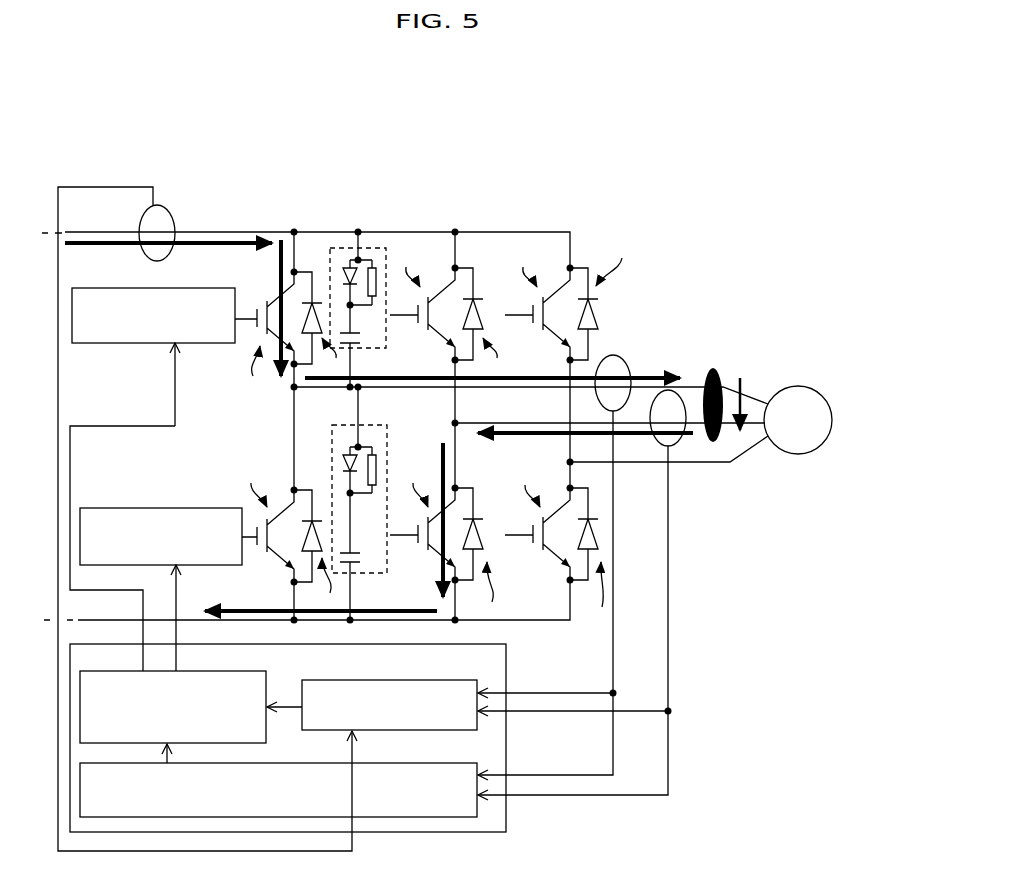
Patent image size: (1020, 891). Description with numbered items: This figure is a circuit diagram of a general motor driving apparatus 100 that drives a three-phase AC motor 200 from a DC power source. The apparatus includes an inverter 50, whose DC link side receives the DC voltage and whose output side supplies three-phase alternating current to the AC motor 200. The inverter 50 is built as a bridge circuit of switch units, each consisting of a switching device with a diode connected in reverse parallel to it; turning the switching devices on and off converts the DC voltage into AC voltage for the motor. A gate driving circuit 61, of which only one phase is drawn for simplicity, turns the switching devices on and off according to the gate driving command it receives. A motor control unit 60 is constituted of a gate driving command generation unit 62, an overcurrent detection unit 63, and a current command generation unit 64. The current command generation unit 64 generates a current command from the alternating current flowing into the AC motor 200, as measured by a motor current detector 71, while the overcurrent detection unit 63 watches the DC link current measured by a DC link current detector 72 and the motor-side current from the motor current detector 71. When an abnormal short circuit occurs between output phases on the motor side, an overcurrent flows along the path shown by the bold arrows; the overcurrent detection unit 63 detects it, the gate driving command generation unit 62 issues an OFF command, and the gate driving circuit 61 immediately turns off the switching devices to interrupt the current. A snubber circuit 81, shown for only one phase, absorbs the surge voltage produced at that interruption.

The motor driving apparatus 100 is at (456, 111).
The inverter 50 is at (506, 202).
The DC link current detector 72 is at (158, 204).
The motor current detector 71 is at (687, 390).
The snubber circuit 81 is at (386, 248).
The gate driving circuit 61 is at (122, 343).
The motor control unit 60 is at (468, 833).
The gate driving command generation unit 62 is at (266, 676).
The overcurrent detection unit 63 is at (443, 680).
The current command generation unit 64 is at (428, 763).
The AC motor 200 is at (800, 455).